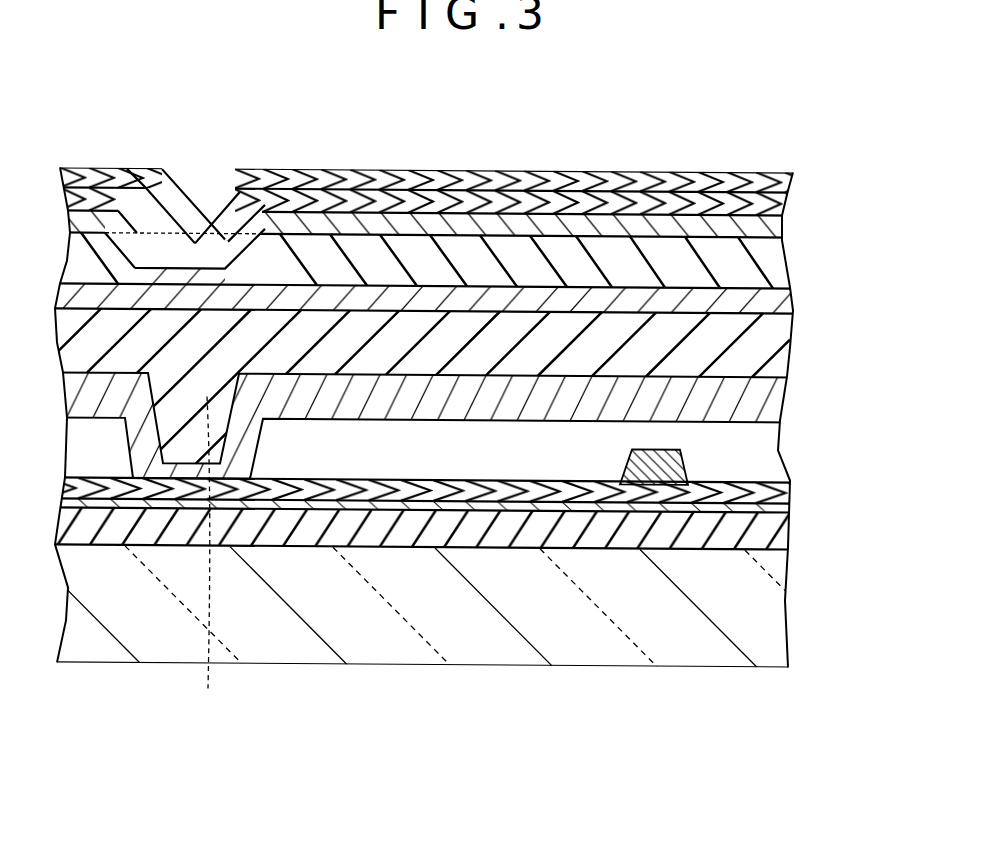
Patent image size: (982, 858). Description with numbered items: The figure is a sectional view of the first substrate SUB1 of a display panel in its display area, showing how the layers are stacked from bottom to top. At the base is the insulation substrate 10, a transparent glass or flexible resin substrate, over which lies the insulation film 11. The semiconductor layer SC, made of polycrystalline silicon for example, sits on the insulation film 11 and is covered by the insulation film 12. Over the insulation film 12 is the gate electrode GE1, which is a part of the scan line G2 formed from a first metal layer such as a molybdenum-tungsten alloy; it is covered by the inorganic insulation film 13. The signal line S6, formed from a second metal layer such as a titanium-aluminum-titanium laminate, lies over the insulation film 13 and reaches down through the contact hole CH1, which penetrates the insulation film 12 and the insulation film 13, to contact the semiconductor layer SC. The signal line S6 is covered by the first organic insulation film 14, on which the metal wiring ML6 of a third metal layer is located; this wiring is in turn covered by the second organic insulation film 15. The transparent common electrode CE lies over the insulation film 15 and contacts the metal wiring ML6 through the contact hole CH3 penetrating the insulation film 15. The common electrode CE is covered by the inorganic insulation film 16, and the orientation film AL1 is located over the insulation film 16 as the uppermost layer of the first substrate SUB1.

The first substrate SUB1 is at (757, 122).
The orientation film AL1 is at (785, 178).
The insulation film 16 is at (784, 200).
The common electrode CE is at (483, 222).
The insulation film 15 is at (783, 256).
The contact hole CH3 is at (200, 185).
The metal wiring ML6 is at (385, 293).
The insulation film 14 is at (782, 355).
The signal line S6 is at (478, 400).
The contact hole CH1 is at (194, 545).
The insulation film 13 is at (780, 440).
The gate electrode GE1 is at (650, 598).
The scan line G2 is at (640, 465).
The insulation film 12 is at (790, 493).
The semiconductor layer SC is at (371, 505).
The insulation film 11 is at (797, 525).
The insulation substrate 10 is at (772, 610).